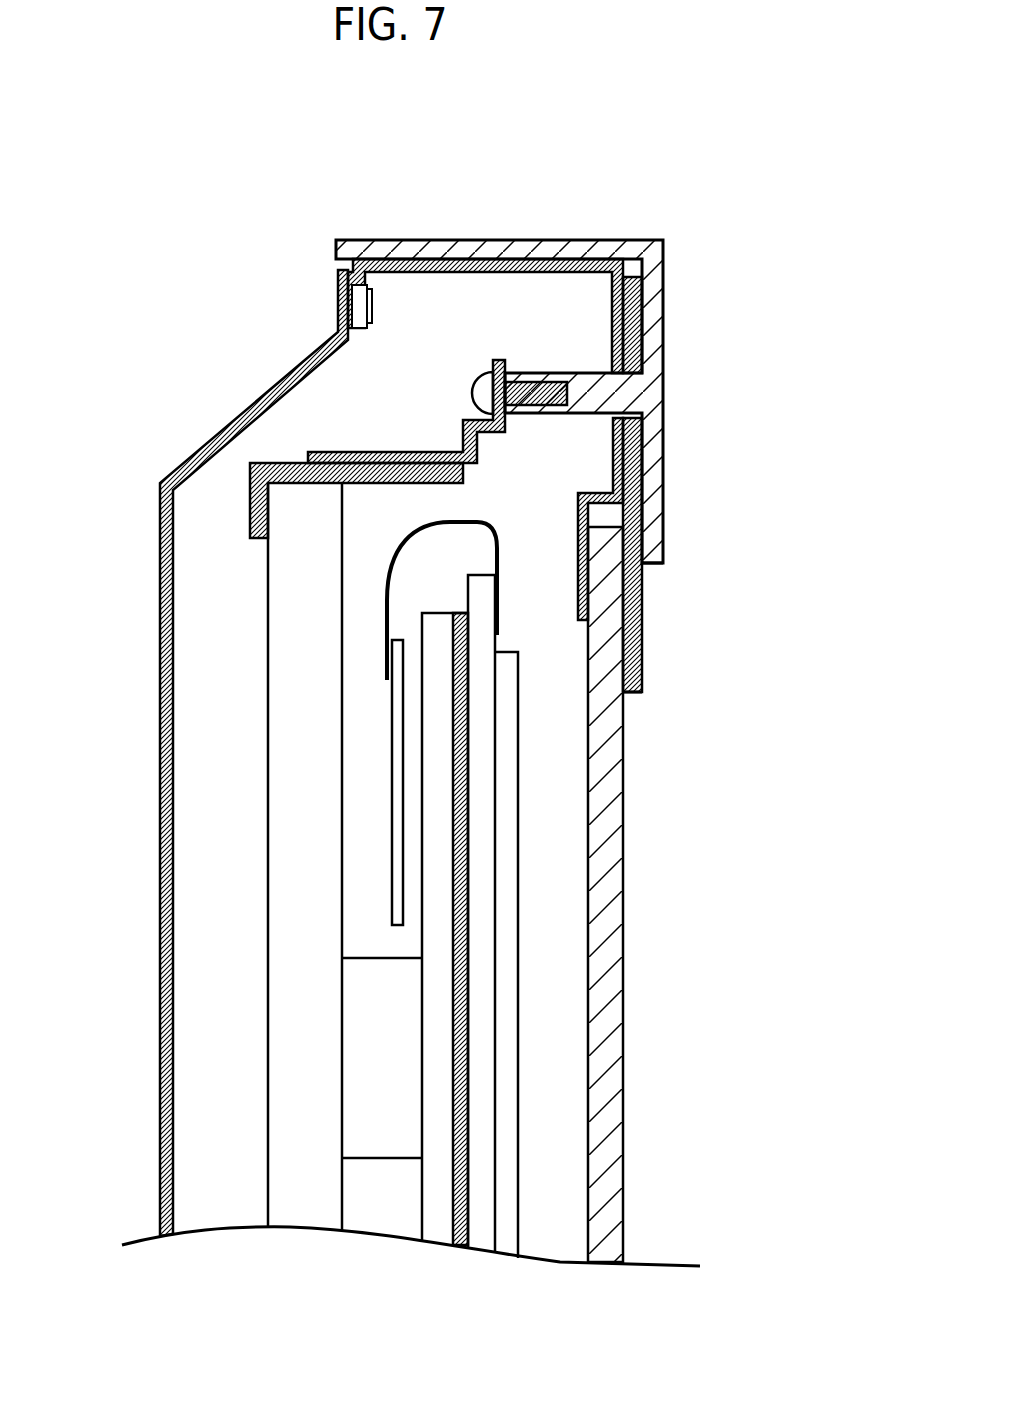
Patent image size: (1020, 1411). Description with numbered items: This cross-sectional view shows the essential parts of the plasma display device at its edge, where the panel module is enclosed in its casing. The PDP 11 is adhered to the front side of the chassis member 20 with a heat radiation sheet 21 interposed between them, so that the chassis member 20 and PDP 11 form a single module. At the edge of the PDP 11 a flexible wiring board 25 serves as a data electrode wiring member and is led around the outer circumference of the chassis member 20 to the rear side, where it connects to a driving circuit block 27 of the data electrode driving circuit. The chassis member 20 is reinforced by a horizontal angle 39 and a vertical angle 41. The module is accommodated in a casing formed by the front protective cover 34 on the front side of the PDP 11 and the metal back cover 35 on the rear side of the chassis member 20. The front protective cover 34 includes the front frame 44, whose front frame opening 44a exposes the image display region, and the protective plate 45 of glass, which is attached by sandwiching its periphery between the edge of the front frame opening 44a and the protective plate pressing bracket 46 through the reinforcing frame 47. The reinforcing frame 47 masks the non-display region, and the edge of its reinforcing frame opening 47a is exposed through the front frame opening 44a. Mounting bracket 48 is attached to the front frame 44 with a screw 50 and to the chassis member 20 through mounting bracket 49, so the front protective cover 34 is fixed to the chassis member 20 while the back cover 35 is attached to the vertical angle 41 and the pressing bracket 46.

The PDP 11 is at (508, 1080).
The chassis member 20 is at (438, 1227).
The heat radiation sheet 21 is at (475, 935).
The flexible wiring board 25 is at (470, 520).
The driving circuit block 27 is at (395, 790).
The front protective cover 34 is at (680, 245).
The back cover 35 is at (185, 460).
The horizontal angle 39 is at (380, 1148).
The vertical angle 41 is at (297, 1205).
The front frame 44 is at (608, 257).
The front frame opening 44a is at (665, 565).
The protective plate 45 is at (606, 782).
The protective plate pressing bracket 46 is at (418, 258).
The reinforcing frame 47 is at (637, 478).
The reinforcing frame opening 47a is at (642, 693).
The mounting bracket 48 is at (325, 455).
The mounting bracket 49 is at (263, 466).
The screw 50 is at (492, 388).